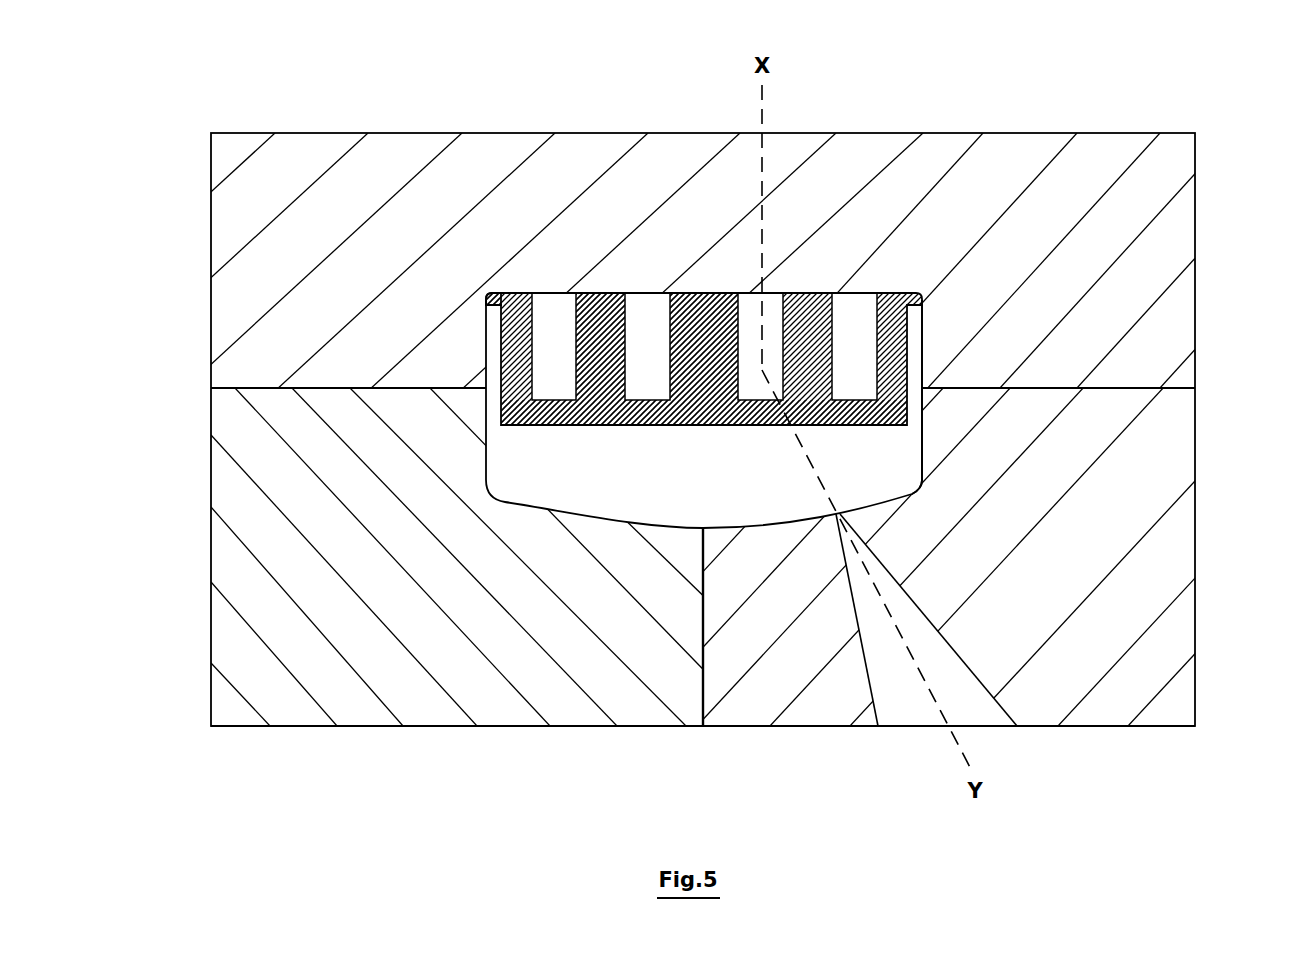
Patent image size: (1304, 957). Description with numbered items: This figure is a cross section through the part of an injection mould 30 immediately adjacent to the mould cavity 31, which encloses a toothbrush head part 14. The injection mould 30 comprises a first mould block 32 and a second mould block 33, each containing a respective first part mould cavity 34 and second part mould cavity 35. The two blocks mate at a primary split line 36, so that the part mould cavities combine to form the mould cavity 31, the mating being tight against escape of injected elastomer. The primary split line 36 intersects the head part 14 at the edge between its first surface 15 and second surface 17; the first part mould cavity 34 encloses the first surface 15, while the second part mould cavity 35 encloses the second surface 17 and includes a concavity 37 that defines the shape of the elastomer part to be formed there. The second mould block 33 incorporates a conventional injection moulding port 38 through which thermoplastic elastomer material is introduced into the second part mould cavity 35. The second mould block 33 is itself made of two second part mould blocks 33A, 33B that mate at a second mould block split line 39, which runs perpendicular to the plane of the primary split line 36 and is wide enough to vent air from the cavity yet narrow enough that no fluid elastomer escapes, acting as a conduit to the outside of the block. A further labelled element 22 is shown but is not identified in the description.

The injection mould 30 is at (297, 117).
The first mould block 32 is at (1196, 174).
The second mould block 33 is at (1197, 536).
The second part mould block 33A is at (222, 641).
The second part mould block 33B is at (1178, 620).
The first part mould cavity 34 is at (923, 345).
The mould cavity 31 is at (923, 377).
The second part mould cavity 35 is at (923, 443).
The flange 22 is at (487, 305).
The primary split line 36 is at (211, 388).
The head part 14 is at (603, 293).
The first surface 15 is at (703, 293).
The second surface 17 is at (633, 427).
The concavity 37 is at (714, 496).
The injection moulding port 38 is at (897, 718).
The second mould block split line 39 is at (705, 730).